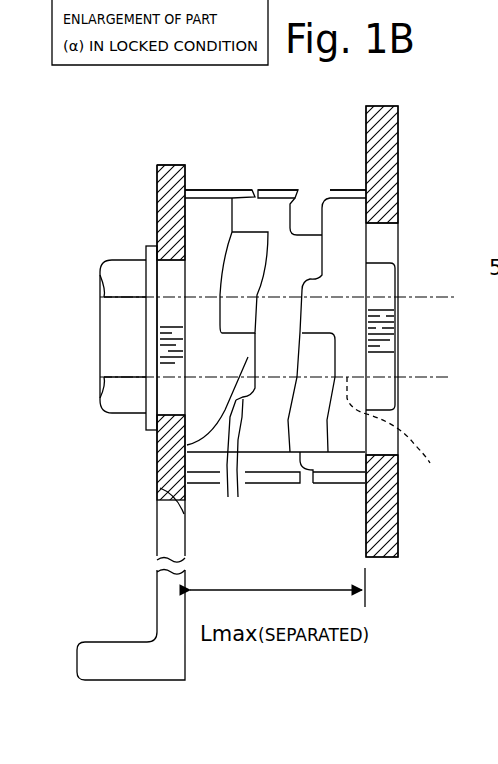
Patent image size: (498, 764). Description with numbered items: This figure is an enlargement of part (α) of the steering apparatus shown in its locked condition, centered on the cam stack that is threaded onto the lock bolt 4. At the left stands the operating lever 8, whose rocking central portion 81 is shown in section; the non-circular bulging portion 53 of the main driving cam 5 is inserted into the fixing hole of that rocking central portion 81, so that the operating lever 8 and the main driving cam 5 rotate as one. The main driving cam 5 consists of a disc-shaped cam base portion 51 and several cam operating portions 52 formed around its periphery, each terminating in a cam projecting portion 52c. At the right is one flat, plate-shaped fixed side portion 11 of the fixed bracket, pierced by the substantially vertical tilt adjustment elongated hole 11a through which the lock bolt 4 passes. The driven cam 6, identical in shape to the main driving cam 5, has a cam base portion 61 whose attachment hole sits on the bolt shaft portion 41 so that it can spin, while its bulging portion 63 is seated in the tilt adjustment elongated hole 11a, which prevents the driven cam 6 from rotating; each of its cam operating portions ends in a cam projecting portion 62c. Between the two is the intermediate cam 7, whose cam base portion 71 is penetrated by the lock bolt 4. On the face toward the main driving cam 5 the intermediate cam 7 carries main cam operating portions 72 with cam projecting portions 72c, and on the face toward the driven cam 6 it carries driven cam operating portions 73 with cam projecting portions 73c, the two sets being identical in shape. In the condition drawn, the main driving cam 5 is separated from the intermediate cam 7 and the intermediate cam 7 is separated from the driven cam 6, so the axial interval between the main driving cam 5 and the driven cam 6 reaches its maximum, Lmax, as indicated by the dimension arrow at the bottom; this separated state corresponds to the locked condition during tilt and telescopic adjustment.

The lock bolt 4 is at (428, 383).
The bolt shaft portion 41 is at (405, 427).
The main driving cam 5 is at (221, 185).
The cam base portion 51 is at (205, 202).
The cam operating portion 52 is at (223, 240).
The cam projecting portion 52c is at (160, 442).
The bulging portion 53 is at (168, 278).
The driven cam 6 is at (347, 183).
The cam base portion 61 is at (360, 203).
The cam projecting portion 62c is at (310, 322).
The bulging portion 63 is at (388, 278).
The intermediate cam 7 is at (289, 185).
The cam base portion 71 is at (268, 200).
The main cam operating portion 72 is at (270, 331).
The cam projecting portion 72c is at (244, 415).
The driven cam operating portion 73 is at (293, 345).
The cam projecting portion 73c is at (315, 460).
The operating lever 8 is at (150, 514).
The rocking central portion 81 is at (158, 192).
The fixed side portion 11 is at (390, 135).
The tilt adjustment elongated hole 11a is at (385, 238).